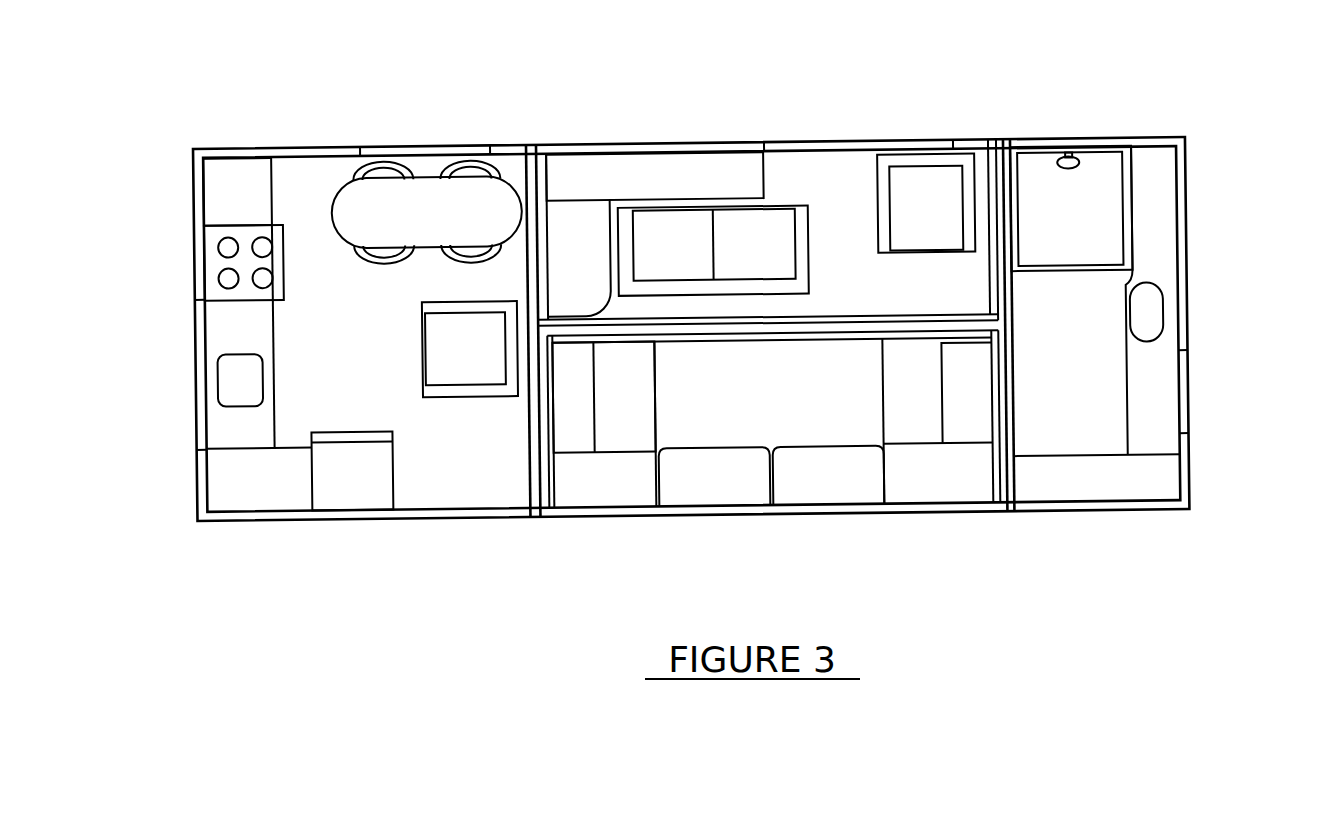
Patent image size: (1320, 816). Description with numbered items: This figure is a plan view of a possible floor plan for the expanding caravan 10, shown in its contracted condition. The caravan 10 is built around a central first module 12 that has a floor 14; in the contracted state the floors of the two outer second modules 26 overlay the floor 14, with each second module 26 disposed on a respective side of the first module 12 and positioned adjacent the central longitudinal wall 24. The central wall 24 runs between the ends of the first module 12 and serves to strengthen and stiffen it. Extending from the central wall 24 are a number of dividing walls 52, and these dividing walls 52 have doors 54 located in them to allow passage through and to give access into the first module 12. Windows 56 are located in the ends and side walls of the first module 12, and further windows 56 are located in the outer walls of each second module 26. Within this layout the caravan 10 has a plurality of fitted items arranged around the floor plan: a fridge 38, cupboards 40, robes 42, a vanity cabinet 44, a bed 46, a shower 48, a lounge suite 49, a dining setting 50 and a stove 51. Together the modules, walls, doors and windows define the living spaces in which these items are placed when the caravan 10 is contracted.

The expanding caravan 10 is at (304, 72).
The central first module 12 is at (1195, 205).
The floor 14 is at (362, 400).
The central longitudinal wall 24 is at (890, 331).
The outer second module 26 is at (970, 140).
The fridge 38 is at (368, 496).
The cupboard 40 is at (262, 215).
The robe 42 is at (569, 389).
The vanity cabinet 44 is at (1164, 414).
The bed 46 is at (769, 423).
The shower 48 is at (1088, 247).
The lounge suite 49 is at (458, 304).
The dining setting 50 is at (413, 223).
The stove 51 is at (282, 262).
The dividing wall 52 is at (516, 469).
The door 54 is at (516, 419).
The window 56 is at (436, 149).